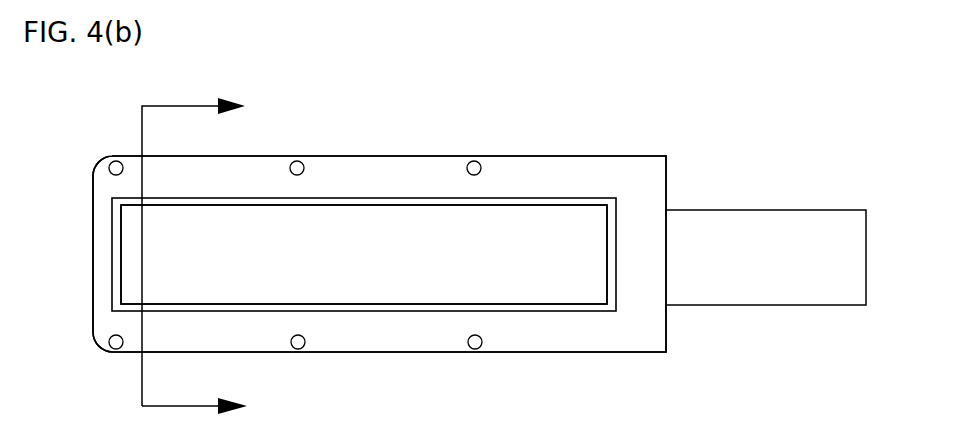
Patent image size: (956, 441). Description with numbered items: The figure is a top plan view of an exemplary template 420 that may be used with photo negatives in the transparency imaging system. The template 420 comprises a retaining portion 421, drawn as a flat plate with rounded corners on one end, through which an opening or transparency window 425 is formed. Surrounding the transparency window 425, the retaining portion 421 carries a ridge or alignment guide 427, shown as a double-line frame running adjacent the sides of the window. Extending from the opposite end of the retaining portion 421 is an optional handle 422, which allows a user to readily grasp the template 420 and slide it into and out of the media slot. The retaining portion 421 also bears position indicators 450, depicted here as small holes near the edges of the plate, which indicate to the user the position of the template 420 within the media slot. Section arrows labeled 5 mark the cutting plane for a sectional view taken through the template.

The template 420 is at (577, 123).
The retaining portion 421 is at (367, 156).
The handle 422 is at (697, 209).
The transparency window 425 is at (364, 254).
The alignment guide 427 is at (517, 303).
The position indicators 450 is at (469, 336).
The section line for FIG. 5 is at (187, 106).